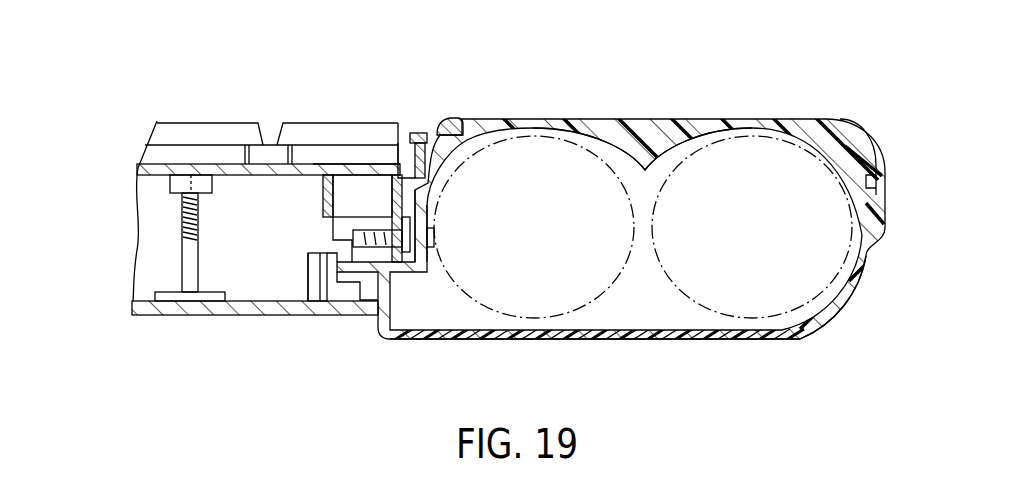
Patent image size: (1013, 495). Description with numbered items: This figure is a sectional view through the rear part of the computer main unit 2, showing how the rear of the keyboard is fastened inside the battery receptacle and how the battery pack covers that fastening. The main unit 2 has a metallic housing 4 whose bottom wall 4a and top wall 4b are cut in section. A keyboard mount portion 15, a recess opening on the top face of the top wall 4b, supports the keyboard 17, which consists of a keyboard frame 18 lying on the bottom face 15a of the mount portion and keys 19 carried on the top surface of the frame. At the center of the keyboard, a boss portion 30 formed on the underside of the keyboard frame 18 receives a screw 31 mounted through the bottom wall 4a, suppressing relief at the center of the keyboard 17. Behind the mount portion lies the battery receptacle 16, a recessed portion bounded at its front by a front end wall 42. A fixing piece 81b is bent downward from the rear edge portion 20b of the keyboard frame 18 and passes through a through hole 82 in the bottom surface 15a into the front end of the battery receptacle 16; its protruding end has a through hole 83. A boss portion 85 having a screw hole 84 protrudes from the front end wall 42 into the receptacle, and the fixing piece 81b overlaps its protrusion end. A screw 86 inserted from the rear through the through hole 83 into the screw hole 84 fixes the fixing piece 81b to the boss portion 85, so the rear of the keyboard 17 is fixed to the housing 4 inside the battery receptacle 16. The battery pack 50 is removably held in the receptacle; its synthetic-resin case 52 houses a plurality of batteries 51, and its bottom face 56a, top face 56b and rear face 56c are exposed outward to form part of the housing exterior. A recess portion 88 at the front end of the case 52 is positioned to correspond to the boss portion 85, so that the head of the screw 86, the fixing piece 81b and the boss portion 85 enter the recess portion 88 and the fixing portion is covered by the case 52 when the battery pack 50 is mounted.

The computer main unit 2 is at (129, 308).
The housing 4 is at (137, 315).
The bottom wall 4a is at (218, 301).
The top wall 4b is at (455, 120).
The keyboard mount portion 15 is at (414, 132).
The bottom face of keyboard mount portion 15a is at (326, 163).
The battery receptacle 16 is at (327, 283).
The keyboard 17 is at (150, 120).
The keyboard frame 18 is at (150, 170).
The keys 19 is at (308, 124).
The rear edge portion 20b is at (402, 148).
The boss portion 30 is at (172, 185).
The screw 31 is at (184, 224).
The front end wall 42 is at (312, 277).
The battery pack 50 is at (752, 113).
The batteries 51 is at (710, 287).
The case 52 is at (850, 120).
The bottom face 56a is at (537, 342).
The top face 56b is at (634, 119).
The rear face 56c is at (873, 252).
The fixing piece 81b is at (428, 196).
The through hole 82 is at (372, 190).
The through hole 83 is at (395, 250).
The screw hole 84 is at (355, 236).
The boss portion 85 is at (388, 265).
The screw 86 is at (435, 236).
The recess portion 88 is at (340, 222).